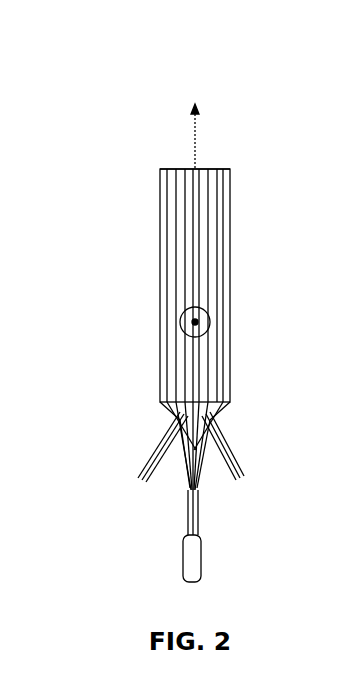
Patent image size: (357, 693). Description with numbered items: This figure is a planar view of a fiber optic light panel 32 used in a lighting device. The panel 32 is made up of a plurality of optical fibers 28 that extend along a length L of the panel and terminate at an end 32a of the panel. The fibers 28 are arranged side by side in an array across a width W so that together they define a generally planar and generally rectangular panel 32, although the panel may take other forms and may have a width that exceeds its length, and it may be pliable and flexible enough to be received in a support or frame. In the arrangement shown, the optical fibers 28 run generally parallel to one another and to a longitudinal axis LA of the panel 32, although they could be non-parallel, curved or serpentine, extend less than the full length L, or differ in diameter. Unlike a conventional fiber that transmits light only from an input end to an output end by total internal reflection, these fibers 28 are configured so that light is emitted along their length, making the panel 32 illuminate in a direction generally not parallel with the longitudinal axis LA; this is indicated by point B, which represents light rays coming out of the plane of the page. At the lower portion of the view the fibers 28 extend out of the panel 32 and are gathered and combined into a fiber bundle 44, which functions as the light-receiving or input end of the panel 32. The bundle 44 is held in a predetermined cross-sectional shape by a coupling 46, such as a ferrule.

The width W is at (231, 83).
The longitudinal axis LA is at (199, 137).
The length L is at (55, 401).
The fiber optic light panel 32 is at (200, 273).
The end of the panel 32a is at (215, 169).
The point B is at (209, 318).
The optical fibers 28 is at (192, 450).
The fiber bundle 44 is at (195, 493).
The coupling 46 is at (200, 570).